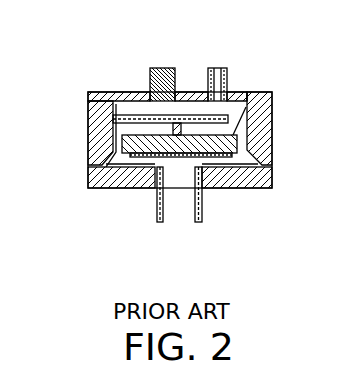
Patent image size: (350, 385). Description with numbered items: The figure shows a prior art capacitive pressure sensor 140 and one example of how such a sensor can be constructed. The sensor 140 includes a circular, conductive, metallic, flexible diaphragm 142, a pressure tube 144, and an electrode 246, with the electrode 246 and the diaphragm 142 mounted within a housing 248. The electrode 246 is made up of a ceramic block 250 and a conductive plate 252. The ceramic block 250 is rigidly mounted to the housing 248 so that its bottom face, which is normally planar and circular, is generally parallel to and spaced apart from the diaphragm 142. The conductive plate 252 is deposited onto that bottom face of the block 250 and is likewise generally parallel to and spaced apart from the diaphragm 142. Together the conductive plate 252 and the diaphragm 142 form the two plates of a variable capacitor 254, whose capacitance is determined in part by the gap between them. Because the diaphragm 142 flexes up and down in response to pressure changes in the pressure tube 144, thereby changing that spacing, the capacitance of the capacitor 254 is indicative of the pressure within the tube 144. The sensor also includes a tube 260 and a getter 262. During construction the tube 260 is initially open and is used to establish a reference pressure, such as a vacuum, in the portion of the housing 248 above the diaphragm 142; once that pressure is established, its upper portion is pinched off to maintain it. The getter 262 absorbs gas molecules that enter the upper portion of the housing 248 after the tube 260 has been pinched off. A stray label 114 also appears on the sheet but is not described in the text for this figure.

The capacitive pressure sensor 140 is at (295, 136).
The diaphragm 142 is at (183, 165).
The pressure tube 144 is at (156, 206).
The electrode 246 is at (257, 95).
The housing 248 is at (87, 109).
The ceramic block 250 is at (172, 135).
The conductive plate 252 is at (170, 158).
The variable capacitor 254 is at (221, 164).
The tube 260 is at (226, 68).
The getter 262 is at (162, 67).
The reference element 114 is at (349, 337).